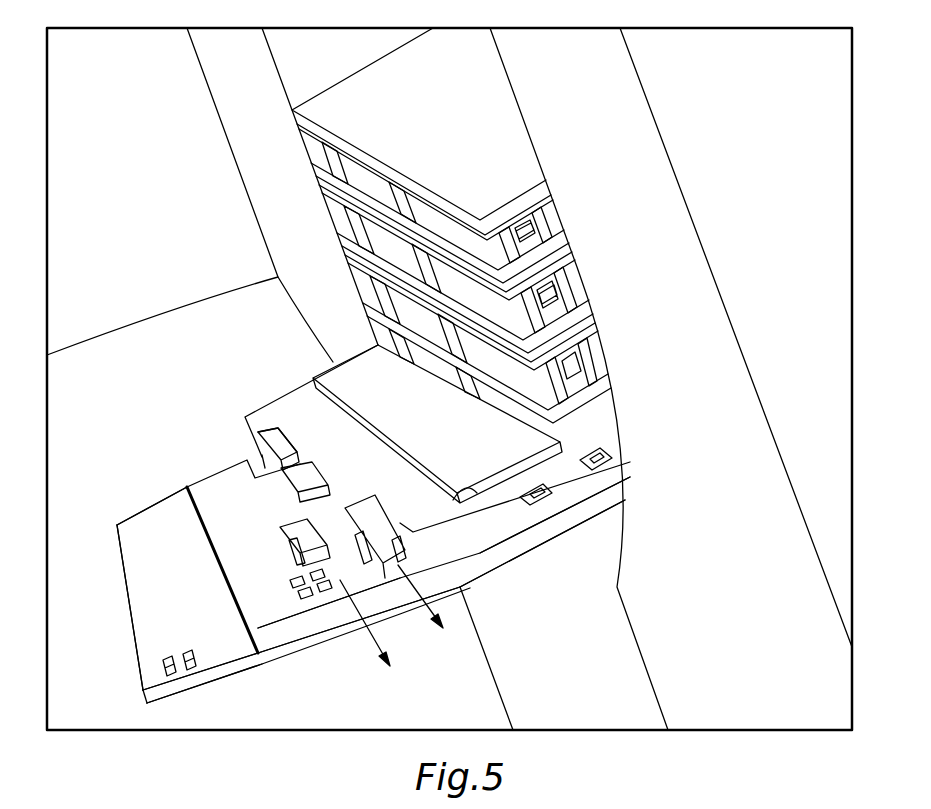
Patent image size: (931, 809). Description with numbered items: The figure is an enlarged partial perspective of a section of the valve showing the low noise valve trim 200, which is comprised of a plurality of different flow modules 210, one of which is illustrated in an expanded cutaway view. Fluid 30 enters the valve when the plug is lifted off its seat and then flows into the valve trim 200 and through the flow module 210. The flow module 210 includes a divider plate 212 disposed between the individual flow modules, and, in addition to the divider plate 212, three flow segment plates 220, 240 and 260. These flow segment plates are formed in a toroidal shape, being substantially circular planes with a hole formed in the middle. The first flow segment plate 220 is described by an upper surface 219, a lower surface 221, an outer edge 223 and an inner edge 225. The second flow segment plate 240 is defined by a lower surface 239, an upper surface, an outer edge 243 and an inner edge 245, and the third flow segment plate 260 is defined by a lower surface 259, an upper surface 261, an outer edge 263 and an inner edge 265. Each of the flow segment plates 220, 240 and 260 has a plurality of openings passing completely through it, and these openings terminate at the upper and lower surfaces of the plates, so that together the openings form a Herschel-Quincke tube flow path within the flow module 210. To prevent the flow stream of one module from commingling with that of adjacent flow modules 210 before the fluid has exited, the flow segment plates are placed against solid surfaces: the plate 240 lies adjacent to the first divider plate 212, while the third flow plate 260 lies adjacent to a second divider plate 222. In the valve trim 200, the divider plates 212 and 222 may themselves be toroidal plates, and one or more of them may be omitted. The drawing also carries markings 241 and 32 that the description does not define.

The valve trim 200 is at (156, 262).
The flow module 210 is at (321, 206).
The divider plate 212 is at (445, 432).
The upper surface 219 is at (475, 520).
The first flow segment plate 220 is at (365, 464).
The lower surface 221 is at (478, 492).
The second divider plate 222 is at (617, 533).
The outer edge 223 is at (500, 540).
The inner edge 225 is at (262, 403).
The lower surface 239 is at (275, 652).
The second flow segment plate 240 is at (267, 549).
The edge of region 240 241 is at (260, 608).
The outer edge 243 is at (318, 623).
The inner edge 245 is at (205, 473).
The lower surface 259 is at (158, 705).
The third flow segment plate 260 is at (190, 579).
The upper surface 261 is at (148, 666).
The outer edge 263 is at (220, 672).
The inner edge 265 is at (143, 517).
The fluid 30 is at (240, 440).
The direction of heat or signal flow 32 is at (373, 643).